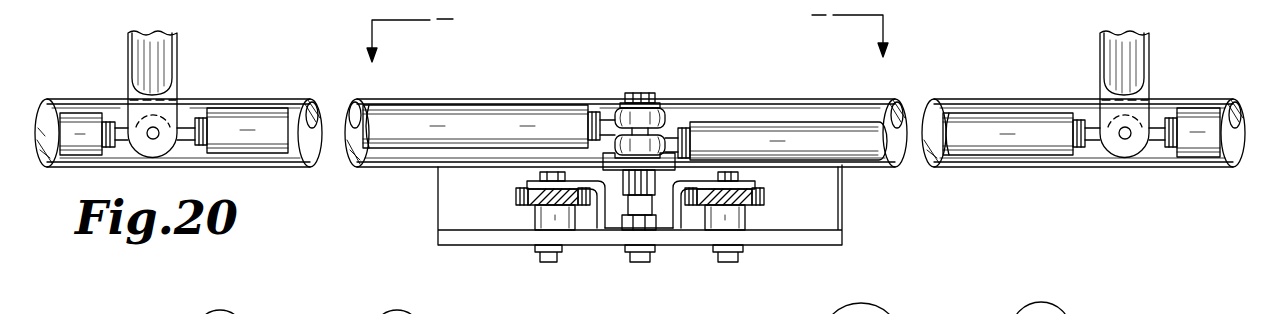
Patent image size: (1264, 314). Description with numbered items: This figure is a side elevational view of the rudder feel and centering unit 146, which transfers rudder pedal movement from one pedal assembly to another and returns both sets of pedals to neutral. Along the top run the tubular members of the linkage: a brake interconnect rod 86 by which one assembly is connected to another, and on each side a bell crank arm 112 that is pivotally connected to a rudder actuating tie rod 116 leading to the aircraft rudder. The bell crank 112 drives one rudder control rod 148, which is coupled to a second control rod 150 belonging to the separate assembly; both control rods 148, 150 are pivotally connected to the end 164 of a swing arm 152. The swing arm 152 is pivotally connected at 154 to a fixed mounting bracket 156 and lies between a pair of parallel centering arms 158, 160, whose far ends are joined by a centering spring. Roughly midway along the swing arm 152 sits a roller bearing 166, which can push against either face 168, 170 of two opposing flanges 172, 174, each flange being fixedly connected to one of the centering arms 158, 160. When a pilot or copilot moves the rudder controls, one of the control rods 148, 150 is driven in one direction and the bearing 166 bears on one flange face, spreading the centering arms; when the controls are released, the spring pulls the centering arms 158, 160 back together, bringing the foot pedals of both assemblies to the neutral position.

The brake interconnect rod 86 is at (205, 167).
The bell crank arm 112 is at (163, 62).
The rudder actuating tie rod 116 is at (75, 118).
The rudder feel and centering unit 146 is at (651, 158).
The rudder control rod 148 is at (263, 118).
The control rod 150 is at (787, 133).
The swing arm 152 is at (665, 153).
The pivot connection 154 is at (336, 313).
The fixed mounting bracket 156 is at (788, 240).
The centering arm 158 is at (517, 193).
The centering arm 160 is at (752, 198).
The end of swing arm 164 is at (638, 93).
The roller bearing 166 is at (623, 192).
The face of flange 168 is at (633, 207).
The face of flange 170 is at (652, 207).
The flange 172 is at (570, 187).
The flange 174 is at (682, 187).